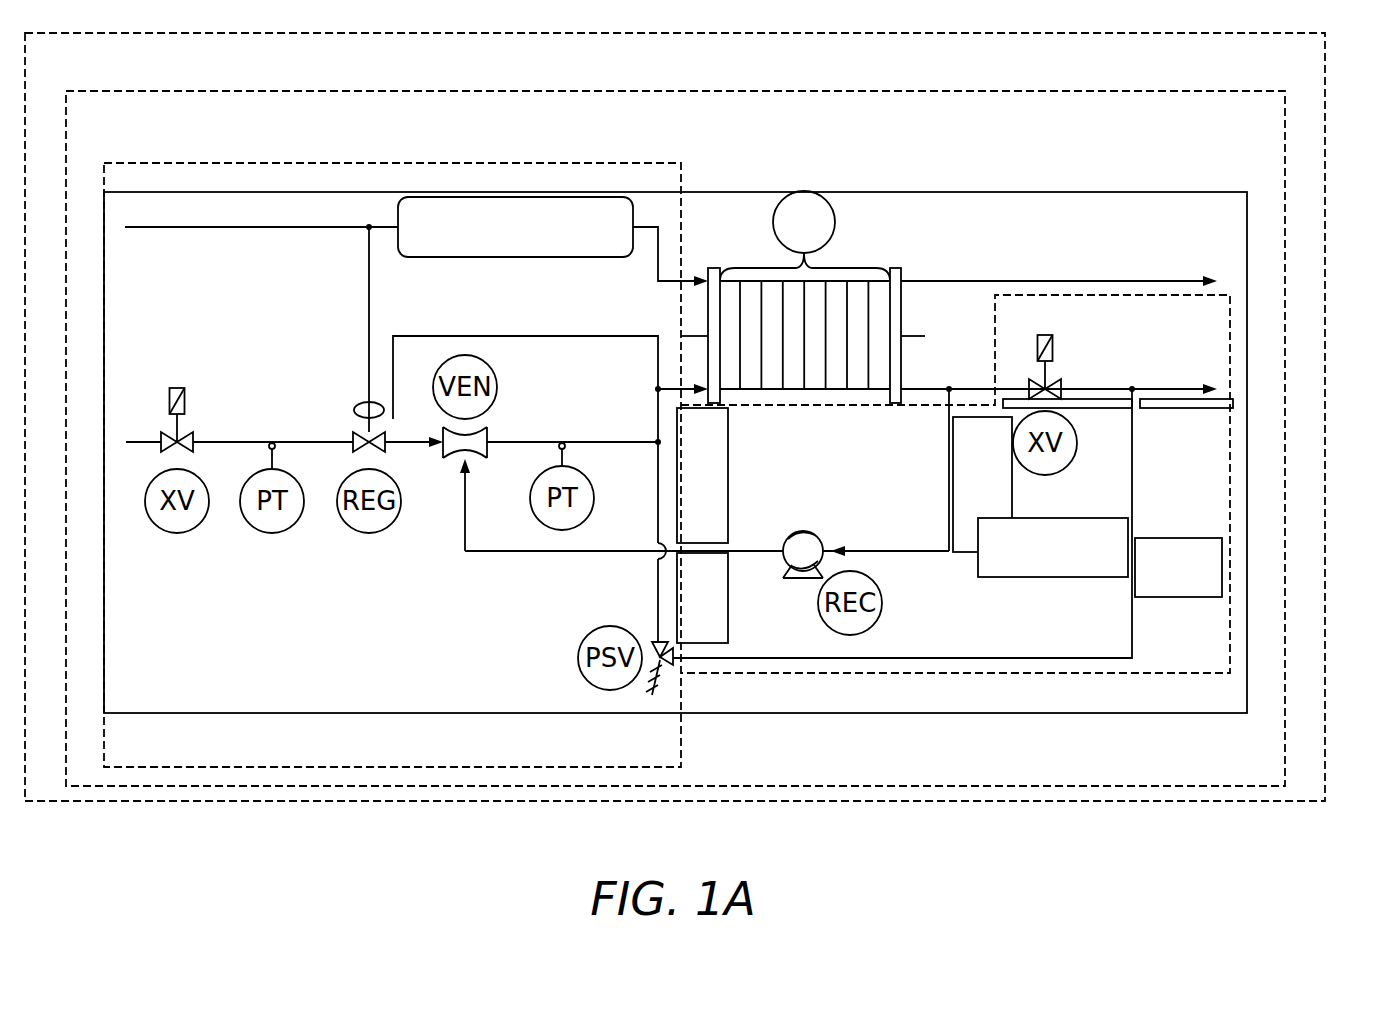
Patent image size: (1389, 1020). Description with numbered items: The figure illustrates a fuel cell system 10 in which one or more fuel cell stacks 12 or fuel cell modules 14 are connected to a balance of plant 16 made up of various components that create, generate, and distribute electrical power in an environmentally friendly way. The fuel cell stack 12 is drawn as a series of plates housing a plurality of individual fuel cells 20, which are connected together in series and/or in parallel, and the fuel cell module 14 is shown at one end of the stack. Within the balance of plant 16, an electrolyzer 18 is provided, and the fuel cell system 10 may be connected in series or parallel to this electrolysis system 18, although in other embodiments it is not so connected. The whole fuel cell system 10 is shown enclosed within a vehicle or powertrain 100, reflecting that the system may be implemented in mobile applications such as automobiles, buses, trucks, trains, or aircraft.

The vehicle 100 is at (1333, 126).
The fuel cell system 10 is at (1295, 215).
The balance of plant 16 is at (436, 150).
The electrolyzer 18 is at (531, 275).
The fuel cell stack 12 is at (804, 252).
The fuel cell module 14 is at (722, 230).
The fuel cells 20 is at (880, 262).